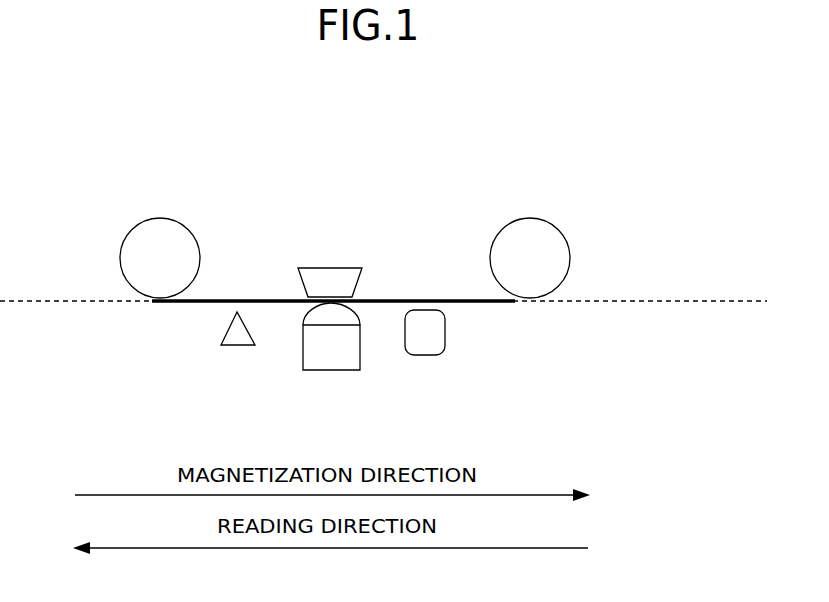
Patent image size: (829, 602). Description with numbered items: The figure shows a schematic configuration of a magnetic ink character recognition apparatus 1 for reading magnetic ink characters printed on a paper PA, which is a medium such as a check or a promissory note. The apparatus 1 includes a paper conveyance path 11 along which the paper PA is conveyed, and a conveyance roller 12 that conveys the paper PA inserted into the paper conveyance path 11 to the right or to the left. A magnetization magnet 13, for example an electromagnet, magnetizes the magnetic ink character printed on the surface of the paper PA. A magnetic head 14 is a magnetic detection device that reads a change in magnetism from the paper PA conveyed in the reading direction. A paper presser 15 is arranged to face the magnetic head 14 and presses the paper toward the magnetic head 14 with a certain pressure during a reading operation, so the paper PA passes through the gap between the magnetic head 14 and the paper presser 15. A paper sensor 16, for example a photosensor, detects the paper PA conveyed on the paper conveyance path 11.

The magnetic ink character recognition apparatus 1 is at (664, 150).
The paper conveyance path 11 is at (742, 298).
The conveyance roller 12 is at (160, 218).
The magnetization magnet 13 is at (421, 356).
The magnetic head 14 is at (330, 371).
The paper presser 15 is at (325, 268).
The paper sensor 16 is at (235, 346).
The paper PA is at (403, 298).